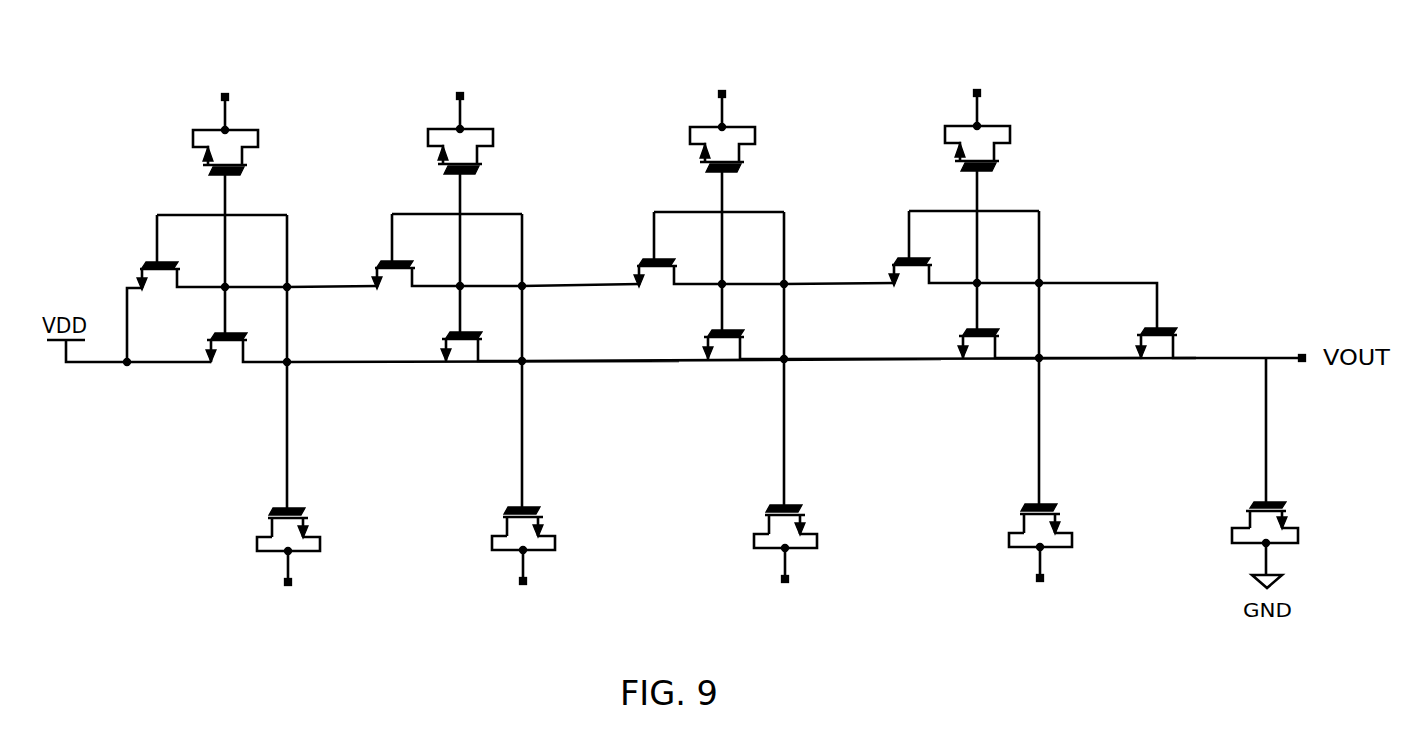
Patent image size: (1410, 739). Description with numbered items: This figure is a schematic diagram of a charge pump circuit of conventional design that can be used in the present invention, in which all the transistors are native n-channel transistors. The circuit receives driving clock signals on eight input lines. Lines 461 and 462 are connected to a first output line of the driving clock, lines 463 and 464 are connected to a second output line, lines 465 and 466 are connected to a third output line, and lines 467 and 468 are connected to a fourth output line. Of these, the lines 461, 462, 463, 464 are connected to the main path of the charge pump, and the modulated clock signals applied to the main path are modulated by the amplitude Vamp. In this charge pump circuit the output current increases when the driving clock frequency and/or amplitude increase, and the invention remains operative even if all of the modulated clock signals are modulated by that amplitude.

The line 461 is at (291, 584).
The line 462 is at (802, 558).
The line 463 is at (540, 560).
The line 464 is at (1057, 557).
The line 465 is at (469, 128).
The line 466 is at (986, 125).
The line 467 is at (228, 94).
The line 468 is at (731, 126).